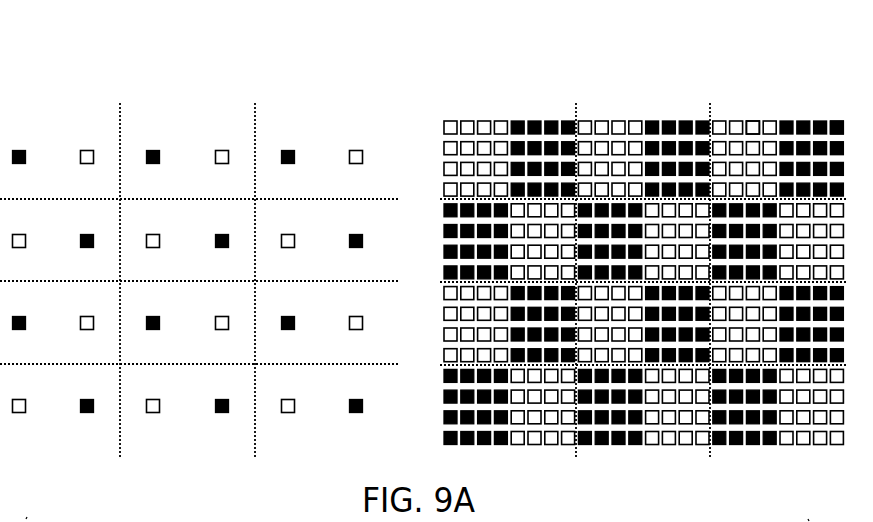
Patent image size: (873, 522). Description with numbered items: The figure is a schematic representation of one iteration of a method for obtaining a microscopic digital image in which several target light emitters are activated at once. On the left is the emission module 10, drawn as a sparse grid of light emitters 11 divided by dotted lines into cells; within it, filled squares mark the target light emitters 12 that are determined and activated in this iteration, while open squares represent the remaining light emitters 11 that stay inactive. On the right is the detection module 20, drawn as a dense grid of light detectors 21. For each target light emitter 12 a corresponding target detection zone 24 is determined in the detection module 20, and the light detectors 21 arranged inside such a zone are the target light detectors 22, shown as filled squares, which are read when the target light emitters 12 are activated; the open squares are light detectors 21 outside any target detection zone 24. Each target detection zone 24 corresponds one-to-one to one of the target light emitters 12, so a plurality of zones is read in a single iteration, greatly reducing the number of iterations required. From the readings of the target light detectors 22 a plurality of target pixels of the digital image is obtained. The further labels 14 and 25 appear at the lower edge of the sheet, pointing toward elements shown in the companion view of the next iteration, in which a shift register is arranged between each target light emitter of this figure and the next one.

The emission module 10 is at (200, 86).
The light emitters 11 is at (86, 150).
The target light emitter 12 is at (18, 150).
The pixel element 14 is at (27, 517).
The detection module 20 is at (635, 88).
The light detectors 21 is at (753, 120).
The target light detectors 22 is at (838, 120).
The target detection zone 24 is at (553, 106).
The block element 25 is at (808, 519).